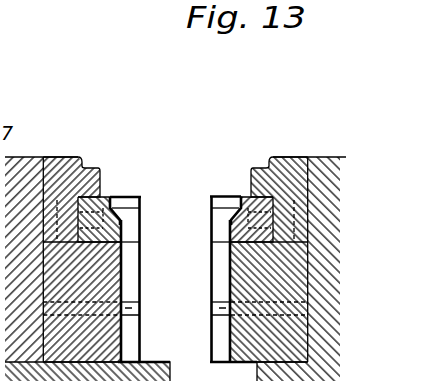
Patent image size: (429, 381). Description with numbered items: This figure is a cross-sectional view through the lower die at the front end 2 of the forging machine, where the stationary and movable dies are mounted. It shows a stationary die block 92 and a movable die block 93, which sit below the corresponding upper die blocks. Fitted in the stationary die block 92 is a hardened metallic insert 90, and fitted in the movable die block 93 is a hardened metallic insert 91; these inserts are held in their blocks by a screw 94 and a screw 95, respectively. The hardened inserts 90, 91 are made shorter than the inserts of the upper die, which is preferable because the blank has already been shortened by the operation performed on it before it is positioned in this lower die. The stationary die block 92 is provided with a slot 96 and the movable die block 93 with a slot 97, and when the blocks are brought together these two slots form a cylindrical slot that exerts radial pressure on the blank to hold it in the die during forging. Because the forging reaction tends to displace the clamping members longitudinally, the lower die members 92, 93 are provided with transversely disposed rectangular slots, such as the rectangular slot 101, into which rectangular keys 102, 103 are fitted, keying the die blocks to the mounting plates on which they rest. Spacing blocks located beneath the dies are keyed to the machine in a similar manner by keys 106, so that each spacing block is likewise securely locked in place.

The front end 2 is at (338, 168).
The hardened metallic insert 90 is at (245, 196).
The hardened metallic insert 91 is at (108, 197).
The stationary die block 92 is at (274, 183).
The movable die block 93 is at (52, 156).
The screw 94 is at (320, 200).
The screw 95 is at (73, 157).
The slot 96 is at (212, 276).
The slot 97 is at (132, 291).
The rectangular slot 101 is at (140, 317).
The rectangular key 102 is at (212, 307).
The rectangular key 103 is at (141, 303).
The key 106 is at (211, 318).